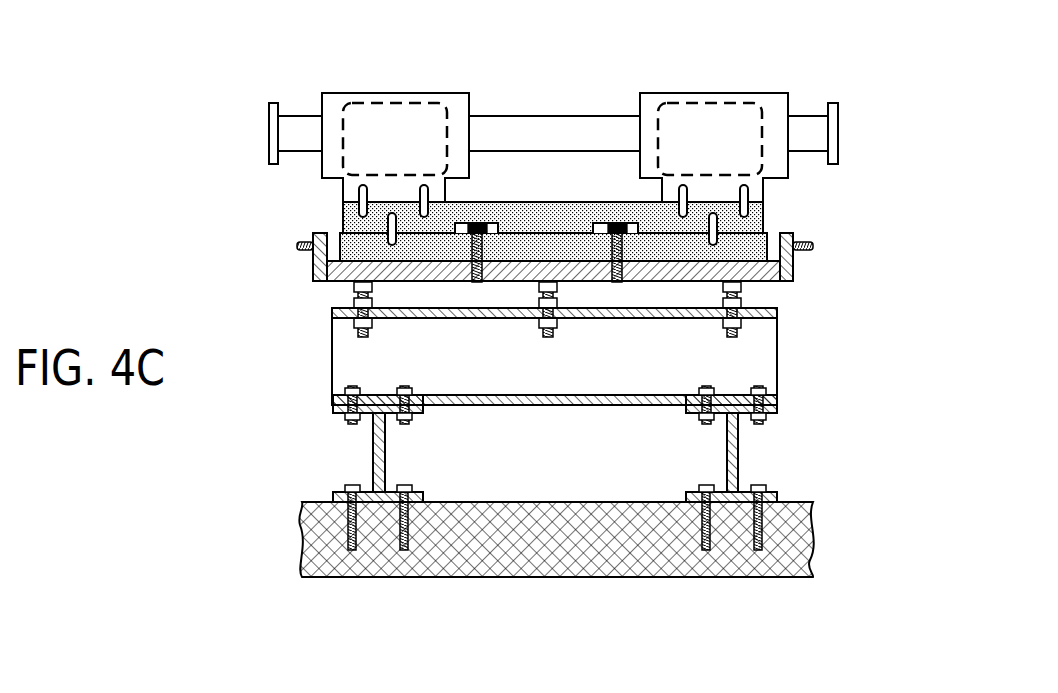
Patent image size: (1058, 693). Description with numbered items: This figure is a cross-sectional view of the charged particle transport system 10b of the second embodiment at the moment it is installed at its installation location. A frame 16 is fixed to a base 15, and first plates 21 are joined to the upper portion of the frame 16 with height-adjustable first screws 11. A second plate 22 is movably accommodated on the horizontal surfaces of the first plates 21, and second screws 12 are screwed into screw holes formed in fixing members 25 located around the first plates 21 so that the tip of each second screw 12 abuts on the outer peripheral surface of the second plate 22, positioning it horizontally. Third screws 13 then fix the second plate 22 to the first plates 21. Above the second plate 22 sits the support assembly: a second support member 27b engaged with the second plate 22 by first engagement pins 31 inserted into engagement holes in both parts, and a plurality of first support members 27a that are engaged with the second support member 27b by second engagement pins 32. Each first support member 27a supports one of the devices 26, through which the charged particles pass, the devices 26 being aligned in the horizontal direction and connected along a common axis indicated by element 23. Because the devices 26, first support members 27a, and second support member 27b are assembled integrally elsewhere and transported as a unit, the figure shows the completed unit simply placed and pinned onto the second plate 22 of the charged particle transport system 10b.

The charged particle transport system 10b is at (220, 108).
The first screw 11 is at (370, 333).
The second screw 12 is at (297, 246).
The third screw 13 is at (480, 220).
The base 15 is at (565, 502).
The frame 16 is at (332, 365).
The first plate 21 is at (427, 265).
The second plate 22 is at (490, 243).
The shaft 23 is at (302, 118).
The fixing member 25 is at (305, 263).
The device 26 is at (370, 103).
The first support member 27a is at (430, 93).
The second support member 27b is at (552, 201).
The first engagement pin 31 is at (388, 232).
The second engagement pin 32 is at (358, 195).